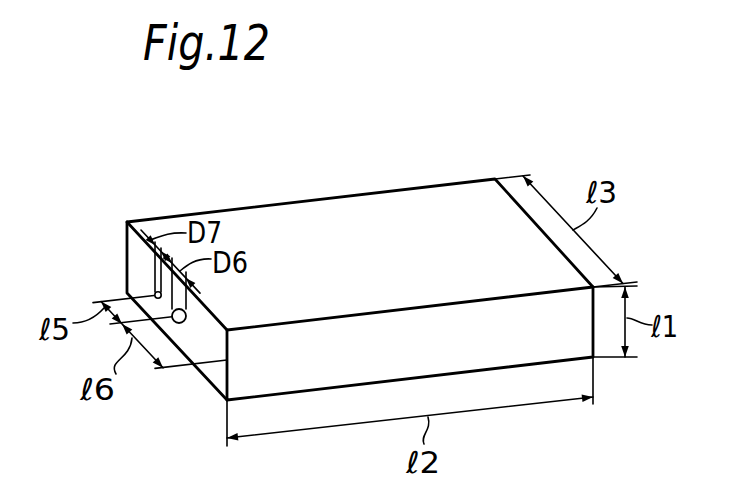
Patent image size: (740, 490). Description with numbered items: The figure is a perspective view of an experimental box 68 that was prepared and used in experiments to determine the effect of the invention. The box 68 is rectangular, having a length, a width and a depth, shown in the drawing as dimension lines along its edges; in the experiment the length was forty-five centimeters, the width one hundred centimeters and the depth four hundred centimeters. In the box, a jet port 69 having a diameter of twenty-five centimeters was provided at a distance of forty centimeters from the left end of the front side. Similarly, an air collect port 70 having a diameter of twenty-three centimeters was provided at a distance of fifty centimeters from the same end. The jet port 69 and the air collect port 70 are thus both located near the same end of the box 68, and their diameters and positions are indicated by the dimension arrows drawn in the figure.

The experimental box 68 is at (440, 156).
The jet port 69 is at (186, 320).
The air collect port 70 is at (155, 292).